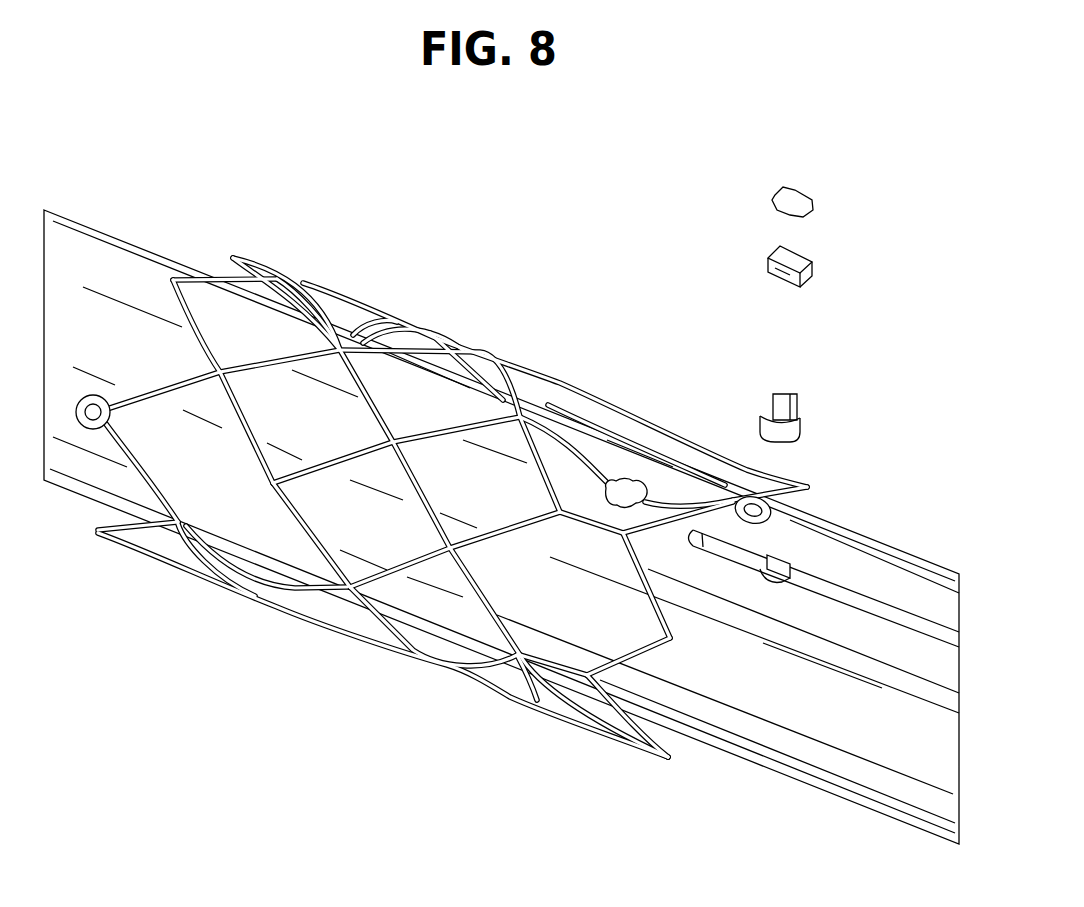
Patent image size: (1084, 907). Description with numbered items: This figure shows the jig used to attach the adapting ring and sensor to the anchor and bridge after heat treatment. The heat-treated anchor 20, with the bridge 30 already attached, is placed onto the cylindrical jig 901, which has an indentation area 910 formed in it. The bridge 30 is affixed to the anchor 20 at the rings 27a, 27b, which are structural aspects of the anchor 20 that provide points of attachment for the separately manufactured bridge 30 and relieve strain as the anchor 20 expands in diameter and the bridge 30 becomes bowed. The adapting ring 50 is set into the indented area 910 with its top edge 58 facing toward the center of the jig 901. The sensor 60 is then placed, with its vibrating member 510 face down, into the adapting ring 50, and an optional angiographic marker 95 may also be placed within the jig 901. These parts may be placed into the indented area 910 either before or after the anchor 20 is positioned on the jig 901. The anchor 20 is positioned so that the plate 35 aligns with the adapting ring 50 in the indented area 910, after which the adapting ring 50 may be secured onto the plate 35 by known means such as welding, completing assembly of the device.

The anchor 20 is at (270, 603).
The ring 27a is at (733, 502).
The ring 27b is at (522, 415).
The bridge 30 is at (545, 480).
The plate 35 is at (627, 485).
The adapting ring 50 is at (790, 397).
The top edge 58 is at (793, 438).
The sensor 60 is at (798, 265).
The angiographic marker 95 is at (792, 195).
The vibrating member 510 is at (780, 283).
The cylindrical jig 901 is at (856, 727).
The indentation area 910 is at (777, 577).